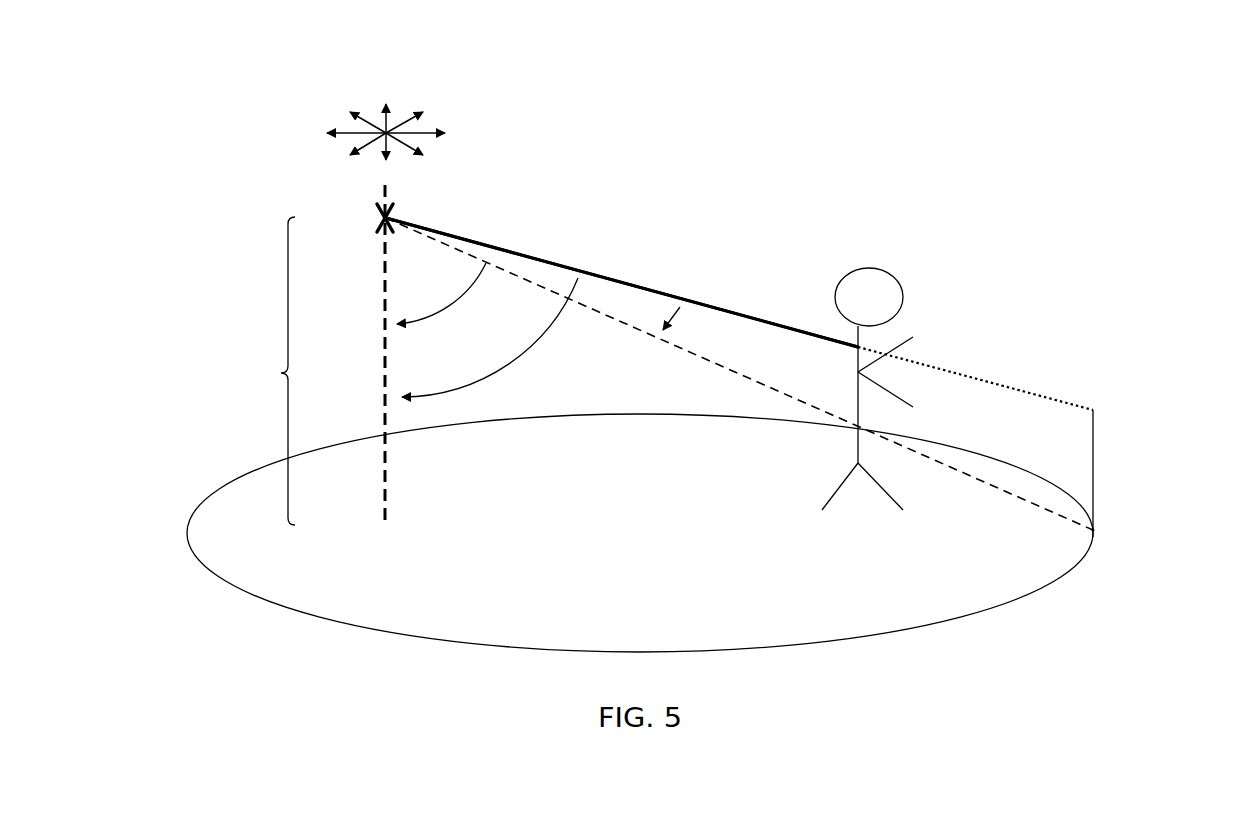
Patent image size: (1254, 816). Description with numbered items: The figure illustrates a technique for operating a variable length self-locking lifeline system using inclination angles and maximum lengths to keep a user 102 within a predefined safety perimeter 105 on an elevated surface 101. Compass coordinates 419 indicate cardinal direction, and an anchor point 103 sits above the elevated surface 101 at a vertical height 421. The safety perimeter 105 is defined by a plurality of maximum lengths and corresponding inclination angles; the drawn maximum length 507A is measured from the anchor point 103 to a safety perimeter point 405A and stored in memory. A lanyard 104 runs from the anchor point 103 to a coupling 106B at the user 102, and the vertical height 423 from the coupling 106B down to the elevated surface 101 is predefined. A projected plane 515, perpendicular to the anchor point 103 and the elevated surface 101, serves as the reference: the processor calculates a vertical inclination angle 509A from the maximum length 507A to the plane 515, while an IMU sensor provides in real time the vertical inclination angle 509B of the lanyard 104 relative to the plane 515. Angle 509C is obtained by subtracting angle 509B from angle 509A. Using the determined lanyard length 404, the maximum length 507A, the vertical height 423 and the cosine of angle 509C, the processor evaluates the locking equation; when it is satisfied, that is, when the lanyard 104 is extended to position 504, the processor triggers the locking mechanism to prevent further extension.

The compass coordinates 419 is at (386, 100).
The anchor point 103 is at (391, 212).
The lanyard 104 is at (622, 282).
The determined lanyard length 404 is at (621, 281).
The user 102 is at (869, 268).
The coupling 106B is at (851, 353).
The vertical inclination angle 509A is at (443, 312).
The vertical inclination angle of lanyard 509B is at (518, 359).
The angle 509C is at (668, 329).
The projected plane 515 is at (375, 325).
The vertical height 421 is at (280, 373).
The position 504 is at (1093, 401).
The vertical height 423 is at (1096, 473).
The safety perimeter point 405A is at (1096, 531).
The maximum length 507A is at (978, 486).
The elevated surface 101 is at (294, 598).
The predefined safety perimeter 105 is at (992, 611).